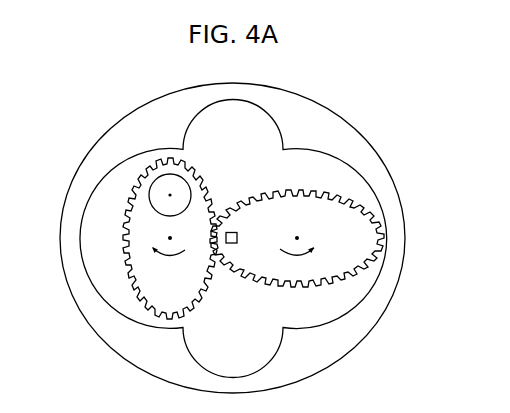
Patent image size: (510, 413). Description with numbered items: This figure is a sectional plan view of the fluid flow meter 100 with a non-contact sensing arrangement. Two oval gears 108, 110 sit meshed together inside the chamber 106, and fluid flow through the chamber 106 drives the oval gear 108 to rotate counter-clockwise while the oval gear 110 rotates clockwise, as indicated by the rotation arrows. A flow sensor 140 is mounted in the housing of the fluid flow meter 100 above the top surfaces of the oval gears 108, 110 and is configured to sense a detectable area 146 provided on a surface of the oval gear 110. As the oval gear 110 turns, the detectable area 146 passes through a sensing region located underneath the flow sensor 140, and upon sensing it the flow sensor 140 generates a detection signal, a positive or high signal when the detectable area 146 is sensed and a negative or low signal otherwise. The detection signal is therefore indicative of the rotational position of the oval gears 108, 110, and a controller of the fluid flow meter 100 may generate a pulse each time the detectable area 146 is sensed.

The fluid flow meter 100 is at (112, 88).
The chamber 106 is at (333, 319).
The oval gear 108 is at (345, 246).
The oval gear 110 is at (155, 282).
The flow sensor 140 is at (238, 236).
The detectable area 146 is at (170, 195).